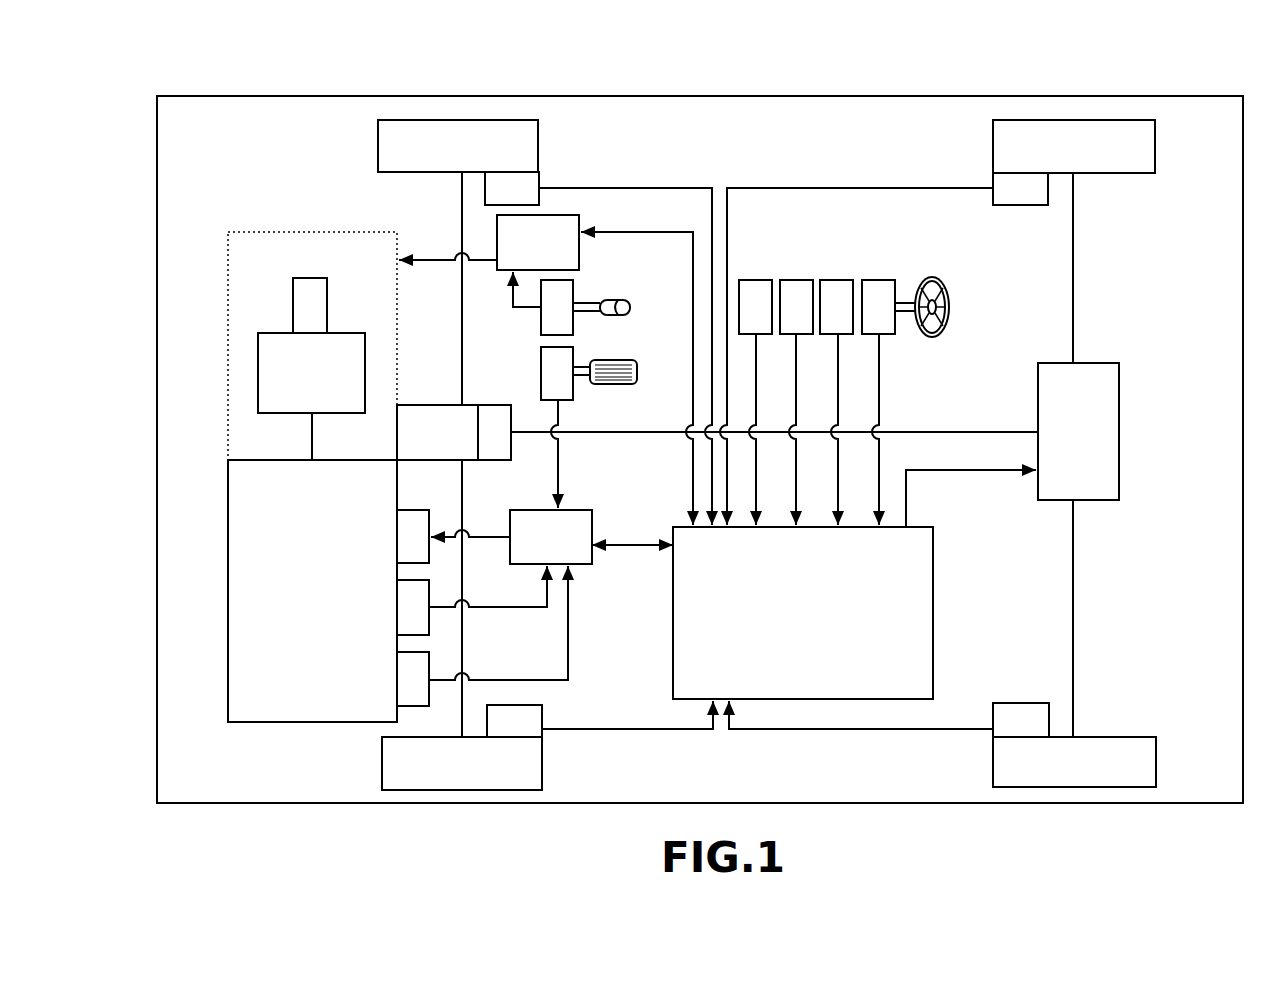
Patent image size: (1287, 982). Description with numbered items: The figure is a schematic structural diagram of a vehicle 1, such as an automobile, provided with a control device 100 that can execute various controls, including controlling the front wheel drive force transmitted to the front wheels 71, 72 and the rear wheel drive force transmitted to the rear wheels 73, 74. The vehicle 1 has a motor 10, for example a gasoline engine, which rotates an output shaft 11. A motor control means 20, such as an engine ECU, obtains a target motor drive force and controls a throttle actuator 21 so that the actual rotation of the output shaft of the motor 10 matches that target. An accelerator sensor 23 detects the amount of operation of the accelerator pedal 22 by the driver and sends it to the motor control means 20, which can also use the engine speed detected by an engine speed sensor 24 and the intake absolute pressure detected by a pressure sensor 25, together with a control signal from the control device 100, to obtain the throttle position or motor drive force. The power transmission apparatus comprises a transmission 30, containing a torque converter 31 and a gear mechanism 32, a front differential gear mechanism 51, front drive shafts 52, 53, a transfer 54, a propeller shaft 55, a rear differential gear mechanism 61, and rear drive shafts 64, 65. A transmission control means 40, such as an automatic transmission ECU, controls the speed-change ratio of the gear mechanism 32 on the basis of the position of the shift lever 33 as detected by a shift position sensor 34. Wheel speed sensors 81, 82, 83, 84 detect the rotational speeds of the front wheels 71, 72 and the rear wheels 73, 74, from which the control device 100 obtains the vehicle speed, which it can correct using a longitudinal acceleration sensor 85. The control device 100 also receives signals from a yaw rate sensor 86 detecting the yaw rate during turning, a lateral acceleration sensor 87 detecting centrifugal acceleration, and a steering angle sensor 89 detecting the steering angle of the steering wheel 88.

The vehicle 1 is at (1243, 94).
The motor 10 is at (316, 723).
The output shaft 11 is at (314, 440).
The motor control means 20 is at (577, 510).
The throttle actuator 21 is at (430, 511).
The accelerator pedal 22 is at (638, 372).
The accelerator sensor 23 is at (574, 350).
The engine speed sensor 24 is at (430, 581).
The pressure sensor 25 is at (430, 653).
The transmission 30 is at (345, 232).
The torque converter 31 is at (345, 333).
The gear mechanism 32 is at (293, 306).
The shift lever 33 is at (631, 308).
The shift position sensor 34 is at (574, 283).
The transmission control means 40 is at (580, 218).
The front differential gear mechanism 51 is at (435, 404).
The front drive shaft 52 is at (464, 386).
The front drive shaft 53 is at (464, 500).
The transfer 54 is at (512, 415).
The propeller shaft 55 is at (612, 432).
The rear differential gear mechanism 61 is at (1112, 363).
The rear drive shaft 64 is at (1075, 320).
The rear drive shaft 65 is at (1075, 555).
The front wheel 71 is at (540, 130).
The front wheel 72 is at (543, 762).
The rear wheel 73 is at (1100, 174).
The rear wheel 74 is at (1110, 737).
The wheel speed sensor 81 is at (540, 177).
The wheel speed sensor 82 is at (543, 712).
The wheel speed sensor 83 is at (1020, 206).
The wheel speed sensor 84 is at (1024, 703).
The longitudinal acceleration sensor 85 is at (757, 281).
The yaw rate sensor 86 is at (797, 281).
The lateral acceleration sensor 87 is at (838, 281).
The steering wheel 88 is at (950, 306).
The steering angle sensor 89 is at (880, 281).
The control device 100 is at (934, 605).